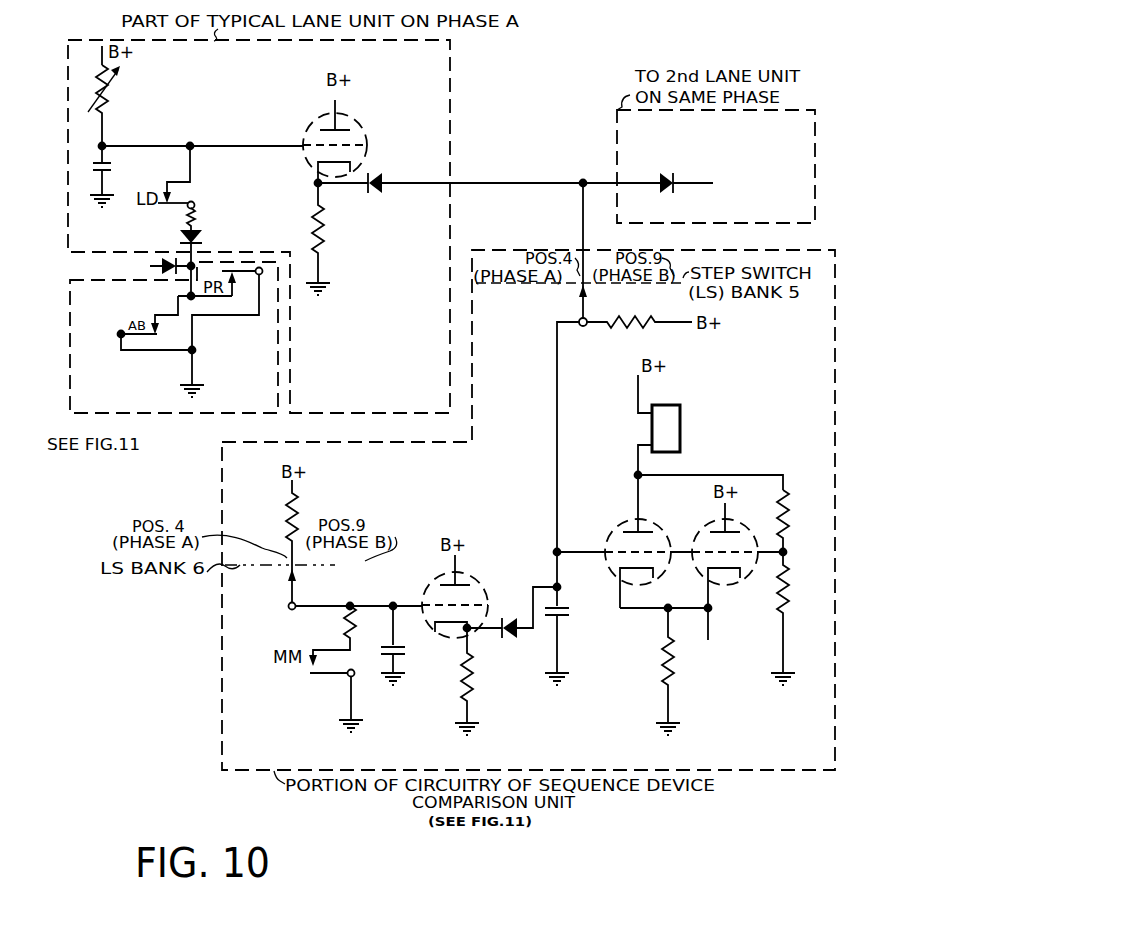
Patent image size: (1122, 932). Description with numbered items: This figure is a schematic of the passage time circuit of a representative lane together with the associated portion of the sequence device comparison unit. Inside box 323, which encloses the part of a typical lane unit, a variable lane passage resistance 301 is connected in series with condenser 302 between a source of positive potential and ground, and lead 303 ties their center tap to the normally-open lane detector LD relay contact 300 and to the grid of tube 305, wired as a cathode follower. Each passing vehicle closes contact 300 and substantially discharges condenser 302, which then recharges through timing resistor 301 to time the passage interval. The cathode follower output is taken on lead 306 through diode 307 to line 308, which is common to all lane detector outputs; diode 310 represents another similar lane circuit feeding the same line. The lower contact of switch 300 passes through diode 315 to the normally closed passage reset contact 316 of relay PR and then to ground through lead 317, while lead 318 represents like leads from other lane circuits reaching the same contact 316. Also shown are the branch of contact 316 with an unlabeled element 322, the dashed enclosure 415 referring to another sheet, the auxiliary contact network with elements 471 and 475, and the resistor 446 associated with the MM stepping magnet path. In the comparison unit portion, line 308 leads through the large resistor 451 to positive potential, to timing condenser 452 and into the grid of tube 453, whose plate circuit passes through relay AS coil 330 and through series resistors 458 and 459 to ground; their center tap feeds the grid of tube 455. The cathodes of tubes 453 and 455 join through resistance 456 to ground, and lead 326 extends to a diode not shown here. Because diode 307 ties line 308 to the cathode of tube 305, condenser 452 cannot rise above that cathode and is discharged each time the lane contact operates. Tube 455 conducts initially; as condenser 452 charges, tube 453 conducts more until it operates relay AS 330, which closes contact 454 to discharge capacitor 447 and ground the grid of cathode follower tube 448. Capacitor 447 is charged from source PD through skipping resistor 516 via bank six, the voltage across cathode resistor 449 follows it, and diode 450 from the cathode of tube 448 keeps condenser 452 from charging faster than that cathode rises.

The lane detector LD relay contact 300 is at (182, 198).
The variable lane passage resistance 301 is at (112, 88).
The condenser 302 is at (114, 161).
The lead 303 is at (162, 132).
The tube 305 is at (338, 115).
The lead 306 is at (340, 186).
The diode 307 is at (383, 180).
The line 308 is at (578, 250).
The diode 310 is at (672, 174).
The diode 315 is at (204, 240).
The passage reset contact 316 is at (248, 276).
The lead 317 is at (200, 356).
The lead 318 is at (152, 266).
The resistor 322 is at (186, 221).
The box 323 is at (450, 84).
The lead 326 is at (712, 634).
The relay AS coil 330 is at (681, 442).
The circuit portion (see FIG. 11) 415 is at (125, 414).
The resistor 446 is at (348, 631).
The capacitor 447 is at (402, 640).
The tube 448 is at (477, 585).
The resistor 449 is at (472, 681).
The diode 450 is at (499, 631).
The resistor 451 is at (622, 330).
The timing condenser 452 is at (568, 602).
The tube 453 is at (633, 523).
The contact 454 is at (322, 677).
The tube 455 is at (719, 525).
The resistance 456 is at (672, 678).
The resistor 458 is at (784, 537).
The resistor 459 is at (784, 603).
The AB switch contact 471 is at (156, 338).
The conductor 475 is at (188, 289).
The resistor 516 is at (286, 520).